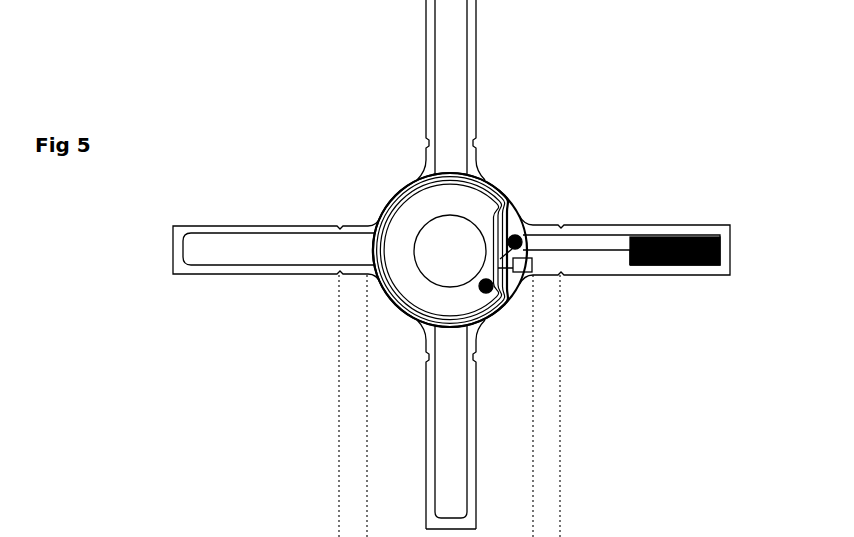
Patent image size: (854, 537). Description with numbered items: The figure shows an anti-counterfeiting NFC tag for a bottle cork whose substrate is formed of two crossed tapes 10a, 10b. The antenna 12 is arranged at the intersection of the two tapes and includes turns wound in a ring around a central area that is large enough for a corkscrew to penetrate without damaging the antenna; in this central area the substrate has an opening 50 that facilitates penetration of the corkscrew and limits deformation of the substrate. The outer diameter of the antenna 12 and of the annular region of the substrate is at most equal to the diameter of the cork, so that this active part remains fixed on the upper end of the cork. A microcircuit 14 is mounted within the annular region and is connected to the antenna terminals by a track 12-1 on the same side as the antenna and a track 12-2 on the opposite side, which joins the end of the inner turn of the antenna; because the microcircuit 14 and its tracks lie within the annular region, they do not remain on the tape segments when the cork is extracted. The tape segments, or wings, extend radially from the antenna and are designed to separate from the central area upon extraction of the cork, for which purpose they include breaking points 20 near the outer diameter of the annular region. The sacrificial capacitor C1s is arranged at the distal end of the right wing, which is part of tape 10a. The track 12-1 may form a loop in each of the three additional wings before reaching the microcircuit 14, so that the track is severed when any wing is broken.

The tape 10a is at (284, 226).
The tape 10b is at (478, 62).
The antenna 12 is at (391, 308).
The track 12-1 is at (577, 235).
The track 12-2 is at (601, 250).
The microcircuit 14 is at (518, 272).
The breaking points 20 is at (530, 272).
The opening 50 is at (441, 215).
The sacrificial capacitor C1s is at (675, 235).